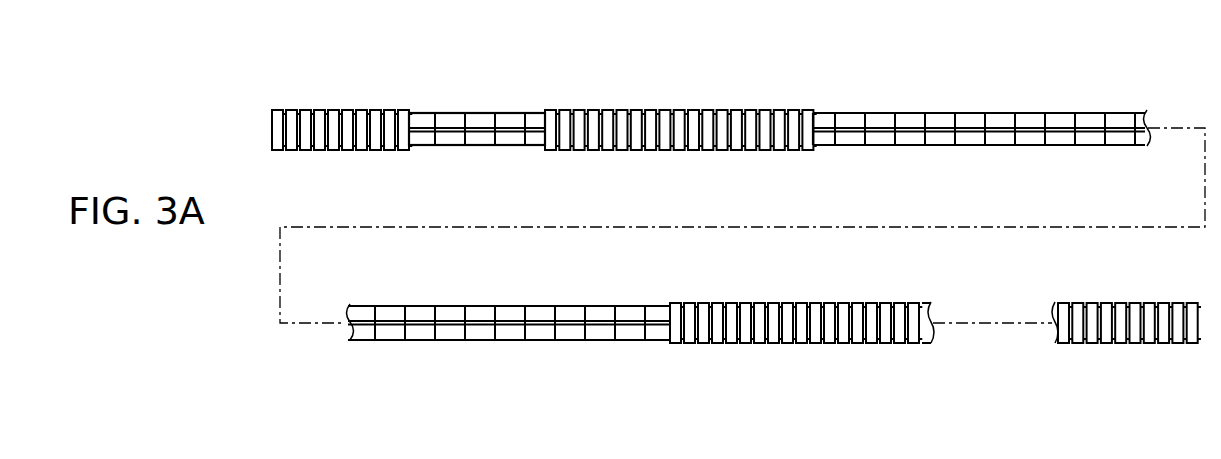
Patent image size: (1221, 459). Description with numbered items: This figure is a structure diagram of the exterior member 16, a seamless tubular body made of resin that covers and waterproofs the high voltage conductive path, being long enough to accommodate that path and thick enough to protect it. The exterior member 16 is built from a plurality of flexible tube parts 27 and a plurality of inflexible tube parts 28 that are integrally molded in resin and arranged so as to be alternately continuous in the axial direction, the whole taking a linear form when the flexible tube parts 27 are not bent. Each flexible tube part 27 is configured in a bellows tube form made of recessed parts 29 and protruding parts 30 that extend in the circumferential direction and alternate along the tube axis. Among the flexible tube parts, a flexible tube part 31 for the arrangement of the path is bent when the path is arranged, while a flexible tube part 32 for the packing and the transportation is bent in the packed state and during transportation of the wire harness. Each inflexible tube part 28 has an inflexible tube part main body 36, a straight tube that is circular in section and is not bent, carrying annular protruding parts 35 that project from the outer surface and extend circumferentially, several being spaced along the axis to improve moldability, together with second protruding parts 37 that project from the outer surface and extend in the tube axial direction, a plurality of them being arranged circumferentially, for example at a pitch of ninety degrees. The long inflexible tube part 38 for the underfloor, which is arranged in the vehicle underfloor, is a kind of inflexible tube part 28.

The exterior member 16 is at (738, 217).
The flexible tube part 27 is at (352, 110).
The inflexible tube part 28 is at (441, 113).
The recessed part 29 is at (394, 151).
The protruding part 30 is at (403, 151).
The flexible tube part for the arrangement of the path 31 is at (305, 151).
The flexible tube part for the packing and the transportation 32 is at (754, 190).
The protruding part 35 is at (452, 134).
The inflexible tube part main body 36 is at (512, 120).
The second protruding part 37 is at (412, 113).
The inflexible tube part for the underfloor 38 is at (1120, 146).